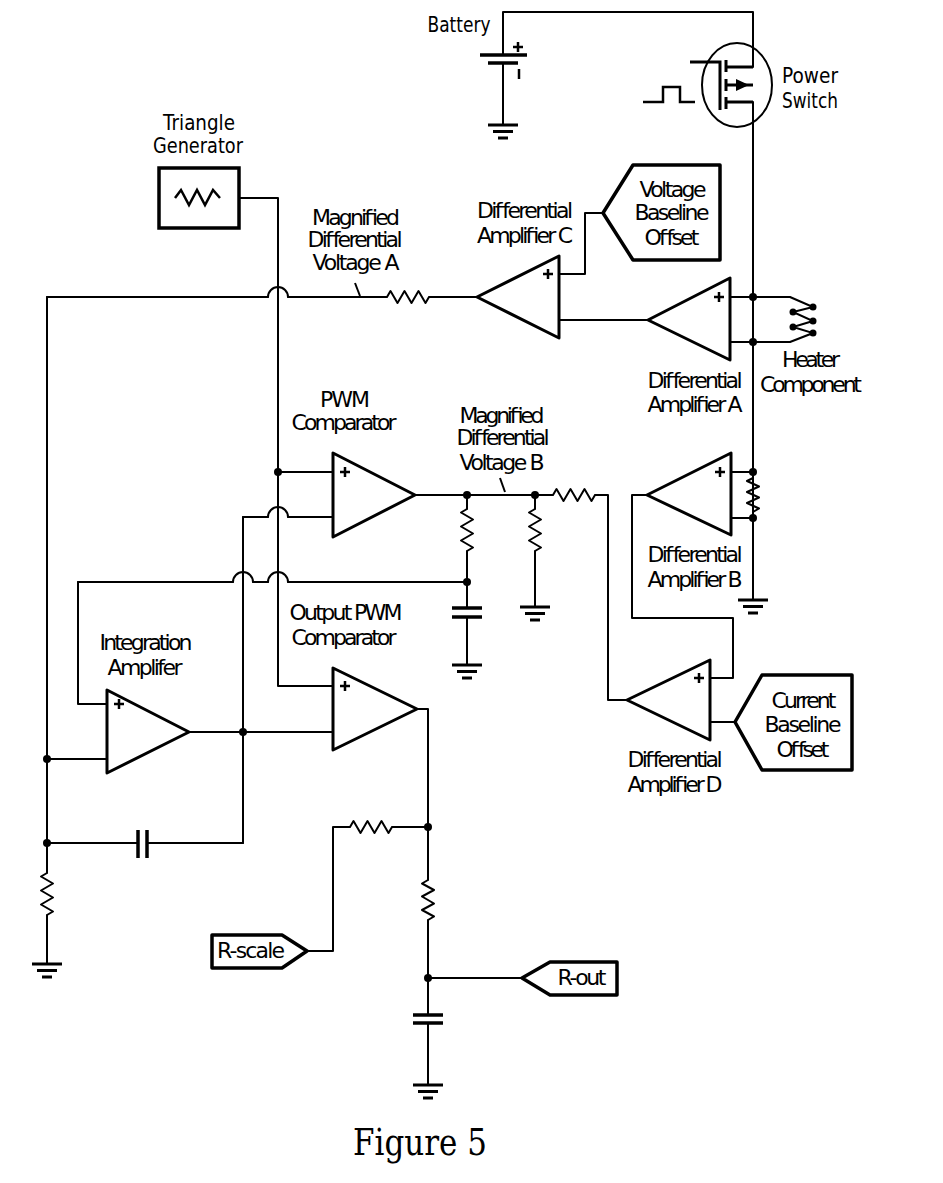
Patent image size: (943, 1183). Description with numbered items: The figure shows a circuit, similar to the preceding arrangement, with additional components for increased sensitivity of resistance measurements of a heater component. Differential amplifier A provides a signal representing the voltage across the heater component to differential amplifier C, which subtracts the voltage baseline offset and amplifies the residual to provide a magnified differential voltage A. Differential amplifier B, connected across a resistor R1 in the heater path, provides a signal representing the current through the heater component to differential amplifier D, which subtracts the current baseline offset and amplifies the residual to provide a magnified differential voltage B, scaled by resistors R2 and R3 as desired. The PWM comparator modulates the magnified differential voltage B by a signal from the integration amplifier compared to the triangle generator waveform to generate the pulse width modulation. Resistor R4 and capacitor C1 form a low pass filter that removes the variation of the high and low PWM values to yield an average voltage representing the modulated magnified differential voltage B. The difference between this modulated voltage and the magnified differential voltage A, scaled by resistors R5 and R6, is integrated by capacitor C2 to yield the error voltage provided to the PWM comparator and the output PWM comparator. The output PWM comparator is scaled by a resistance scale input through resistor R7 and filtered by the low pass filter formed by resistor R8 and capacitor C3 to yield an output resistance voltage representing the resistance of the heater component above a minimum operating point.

The resistor R1 is at (769, 495).
The resistor R2 is at (577, 511).
The resistor R3 is at (519, 530).
The resistor R4 is at (450, 530).
The resistor R5 is at (408, 314).
The resistor R6 is at (65, 894).
The resistor R7 is at (371, 810).
The resistor R8 is at (446, 900).
The capacitor C1 is at (477, 628).
The capacitor C2 is at (152, 860).
The capacitor C3 is at (438, 1033).